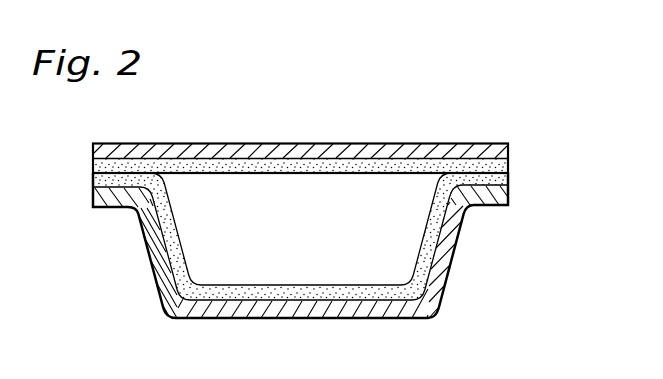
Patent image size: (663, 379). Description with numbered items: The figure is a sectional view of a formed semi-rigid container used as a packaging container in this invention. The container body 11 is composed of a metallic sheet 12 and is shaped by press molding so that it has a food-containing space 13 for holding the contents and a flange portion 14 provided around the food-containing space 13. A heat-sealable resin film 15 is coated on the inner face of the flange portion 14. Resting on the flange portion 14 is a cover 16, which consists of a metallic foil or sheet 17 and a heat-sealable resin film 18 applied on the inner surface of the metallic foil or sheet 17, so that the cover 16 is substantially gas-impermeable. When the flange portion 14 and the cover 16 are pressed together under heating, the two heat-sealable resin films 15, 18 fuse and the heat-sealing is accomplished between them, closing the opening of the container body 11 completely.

The container body 11 is at (448, 293).
The metallic sheet 12 is at (333, 297).
The food-containing space 13 is at (262, 258).
The flange portion 14 is at (108, 193).
The heat-sealable resin film 15 is at (102, 181).
The cover 16 is at (221, 138).
The metallic foil or sheet 17 is at (282, 152).
The heat-sealable resin film 18 is at (333, 168).